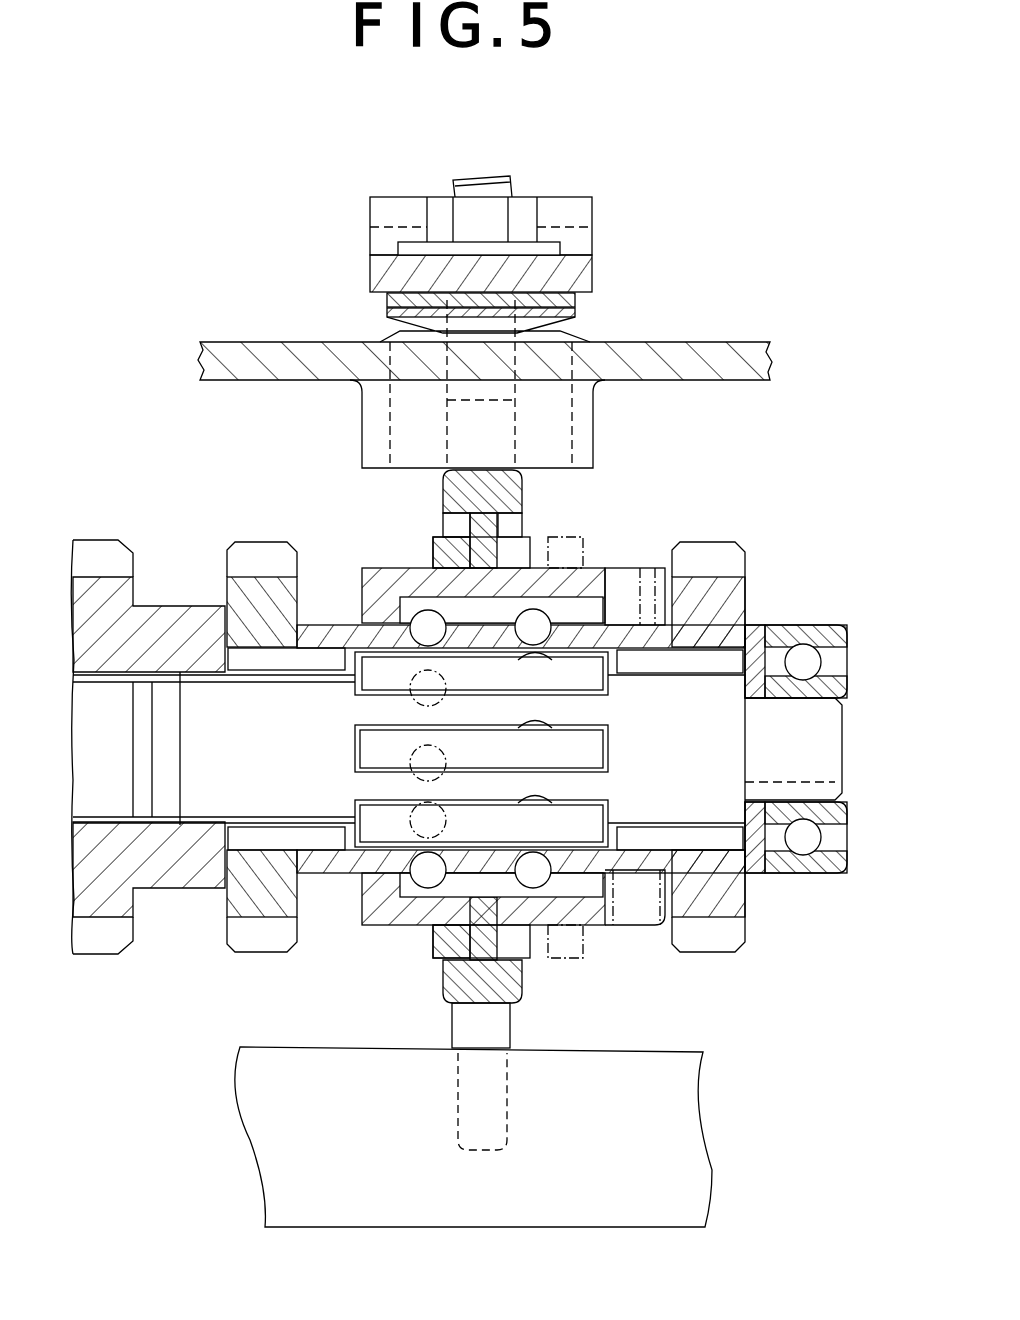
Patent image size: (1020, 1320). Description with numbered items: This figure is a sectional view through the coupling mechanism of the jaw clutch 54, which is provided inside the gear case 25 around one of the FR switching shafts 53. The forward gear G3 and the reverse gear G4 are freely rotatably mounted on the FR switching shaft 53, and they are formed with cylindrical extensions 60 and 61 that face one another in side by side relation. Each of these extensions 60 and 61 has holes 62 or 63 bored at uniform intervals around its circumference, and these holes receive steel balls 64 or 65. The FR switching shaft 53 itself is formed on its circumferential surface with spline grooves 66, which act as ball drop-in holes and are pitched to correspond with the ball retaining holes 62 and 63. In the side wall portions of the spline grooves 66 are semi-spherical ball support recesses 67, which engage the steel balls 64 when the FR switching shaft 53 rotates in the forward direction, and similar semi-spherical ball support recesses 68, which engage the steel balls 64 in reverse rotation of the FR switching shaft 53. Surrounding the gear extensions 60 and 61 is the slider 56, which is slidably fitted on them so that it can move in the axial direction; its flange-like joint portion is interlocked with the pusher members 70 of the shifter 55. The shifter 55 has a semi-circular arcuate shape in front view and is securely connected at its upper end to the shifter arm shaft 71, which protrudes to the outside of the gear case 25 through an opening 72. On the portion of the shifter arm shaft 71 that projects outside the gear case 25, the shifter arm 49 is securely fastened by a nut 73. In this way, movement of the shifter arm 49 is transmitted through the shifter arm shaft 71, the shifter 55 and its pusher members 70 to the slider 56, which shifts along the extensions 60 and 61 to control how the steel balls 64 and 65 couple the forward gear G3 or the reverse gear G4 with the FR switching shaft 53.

The gear case 25 is at (690, 348).
The shifter arm 49 is at (570, 205).
The nut 73 is at (440, 205).
The shifter arm shaft 71 is at (447, 413).
The opening 72 is at (568, 400).
The pusher members 70 is at (510, 500).
The shifter 55 is at (450, 522).
The slider 56 is at (372, 572).
The cylindrical extension 60 is at (642, 580).
The jaw clutch 54 is at (678, 546).
The steel balls 65 is at (428, 628).
The steel balls 64 is at (533, 627).
The holes 62 is at (590, 690).
The spline grooves 66 is at (385, 712).
The holes 63 is at (388, 685).
The ball support recesses 68 is at (440, 773).
The ball support recesses 67 is at (545, 726).
The reverse gear G4 is at (246, 538).
The cylindrical extension 61 is at (325, 620).
The forward gear G3 is at (724, 540).
The FR switching shaft 53 is at (730, 760).